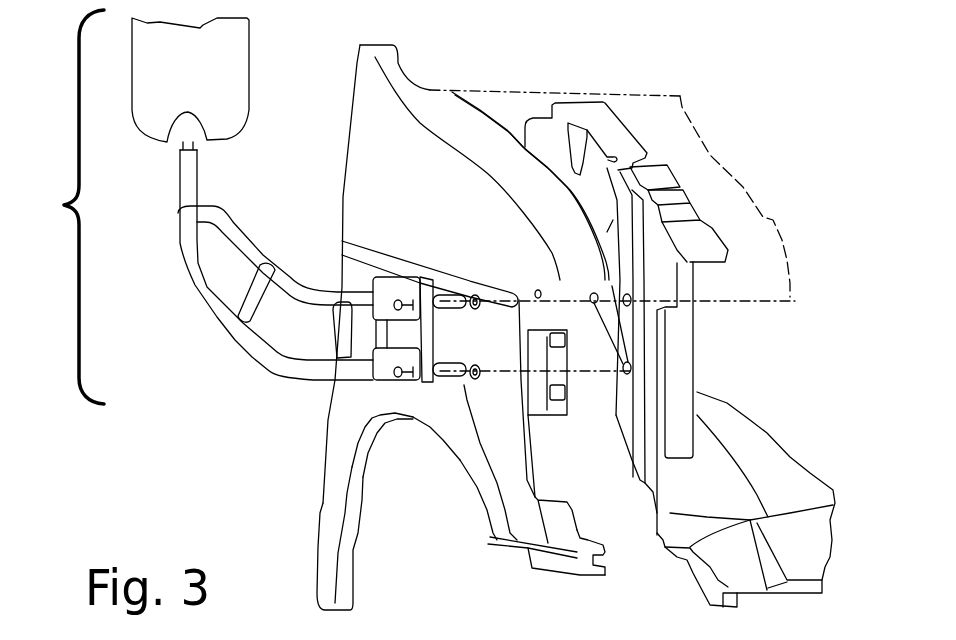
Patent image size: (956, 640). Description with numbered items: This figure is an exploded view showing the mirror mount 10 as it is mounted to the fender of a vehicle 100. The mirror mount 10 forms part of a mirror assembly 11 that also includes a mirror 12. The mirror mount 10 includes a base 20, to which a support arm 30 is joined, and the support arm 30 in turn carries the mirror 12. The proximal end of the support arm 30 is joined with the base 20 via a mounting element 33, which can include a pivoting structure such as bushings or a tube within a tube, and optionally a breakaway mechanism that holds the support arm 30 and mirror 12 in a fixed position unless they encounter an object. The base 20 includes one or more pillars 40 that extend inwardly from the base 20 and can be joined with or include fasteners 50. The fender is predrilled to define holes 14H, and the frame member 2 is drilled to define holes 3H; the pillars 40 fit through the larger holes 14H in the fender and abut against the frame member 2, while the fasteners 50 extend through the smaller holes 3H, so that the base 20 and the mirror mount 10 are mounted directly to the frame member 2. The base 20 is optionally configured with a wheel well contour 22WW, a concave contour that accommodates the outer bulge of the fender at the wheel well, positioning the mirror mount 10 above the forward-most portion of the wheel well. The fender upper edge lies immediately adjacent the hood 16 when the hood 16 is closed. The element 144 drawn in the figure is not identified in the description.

The vehicle 100 is at (431, 50).
The mirror mount 10 is at (268, 451).
The mirror assembly 11 is at (62, 205).
The mirror 12 is at (142, 133).
The support arm 30 is at (233, 323).
The mounting element 33 is at (385, 280).
The fasteners 50 is at (394, 305).
The pillars 40 is at (457, 323).
The holes 14H is at (472, 295).
The lower mounting hole 144 is at (479, 379).
The holes 3H is at (545, 292).
The hood 16 is at (652, 107).
The frame member 2 is at (683, 364).
The base 20 is at (425, 384).
The wheel well contour 22WW is at (477, 458).